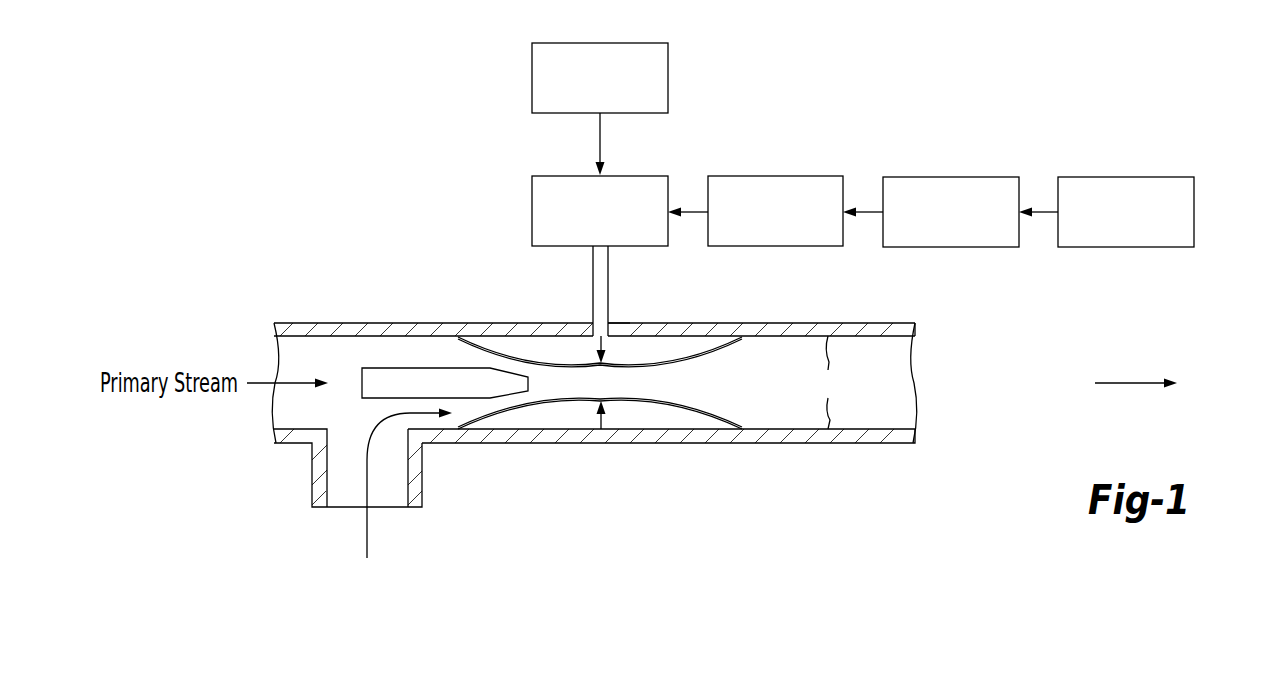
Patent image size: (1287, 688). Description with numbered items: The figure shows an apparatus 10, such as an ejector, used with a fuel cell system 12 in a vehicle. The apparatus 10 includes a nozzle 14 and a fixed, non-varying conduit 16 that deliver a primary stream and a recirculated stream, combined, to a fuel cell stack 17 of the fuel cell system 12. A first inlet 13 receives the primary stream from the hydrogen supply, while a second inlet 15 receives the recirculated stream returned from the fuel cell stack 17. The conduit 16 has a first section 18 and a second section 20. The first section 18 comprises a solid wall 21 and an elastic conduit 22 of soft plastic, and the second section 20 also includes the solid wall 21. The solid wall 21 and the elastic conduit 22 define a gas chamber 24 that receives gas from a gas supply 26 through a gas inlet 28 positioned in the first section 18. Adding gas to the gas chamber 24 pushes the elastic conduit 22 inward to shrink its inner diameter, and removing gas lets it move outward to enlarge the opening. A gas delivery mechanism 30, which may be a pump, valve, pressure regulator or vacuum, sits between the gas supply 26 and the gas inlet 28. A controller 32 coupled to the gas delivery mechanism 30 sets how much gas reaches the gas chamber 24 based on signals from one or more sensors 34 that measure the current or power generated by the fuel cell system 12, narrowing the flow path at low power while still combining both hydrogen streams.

The apparatus 10 is at (455, 165).
The fuel cell system 12 is at (1127, 177).
The first inlet 13 is at (253, 420).
The nozzle 14 is at (407, 368).
The second inlet 15 is at (398, 513).
The conduit 16 is at (750, 315).
The fuel cell stack 17 is at (1258, 388).
The first section 18 is at (627, 317).
The second section 20 is at (358, 312).
The solid wall 21 is at (828, 382).
The elastic conduit 22 is at (663, 352).
The gas chamber 24 is at (585, 352).
The gas supply 26 is at (668, 78).
The gas inlet 28 is at (593, 313).
The gas delivery mechanism 30 is at (550, 176).
The controller 32 is at (777, 176).
The sensor 34 is at (952, 177).